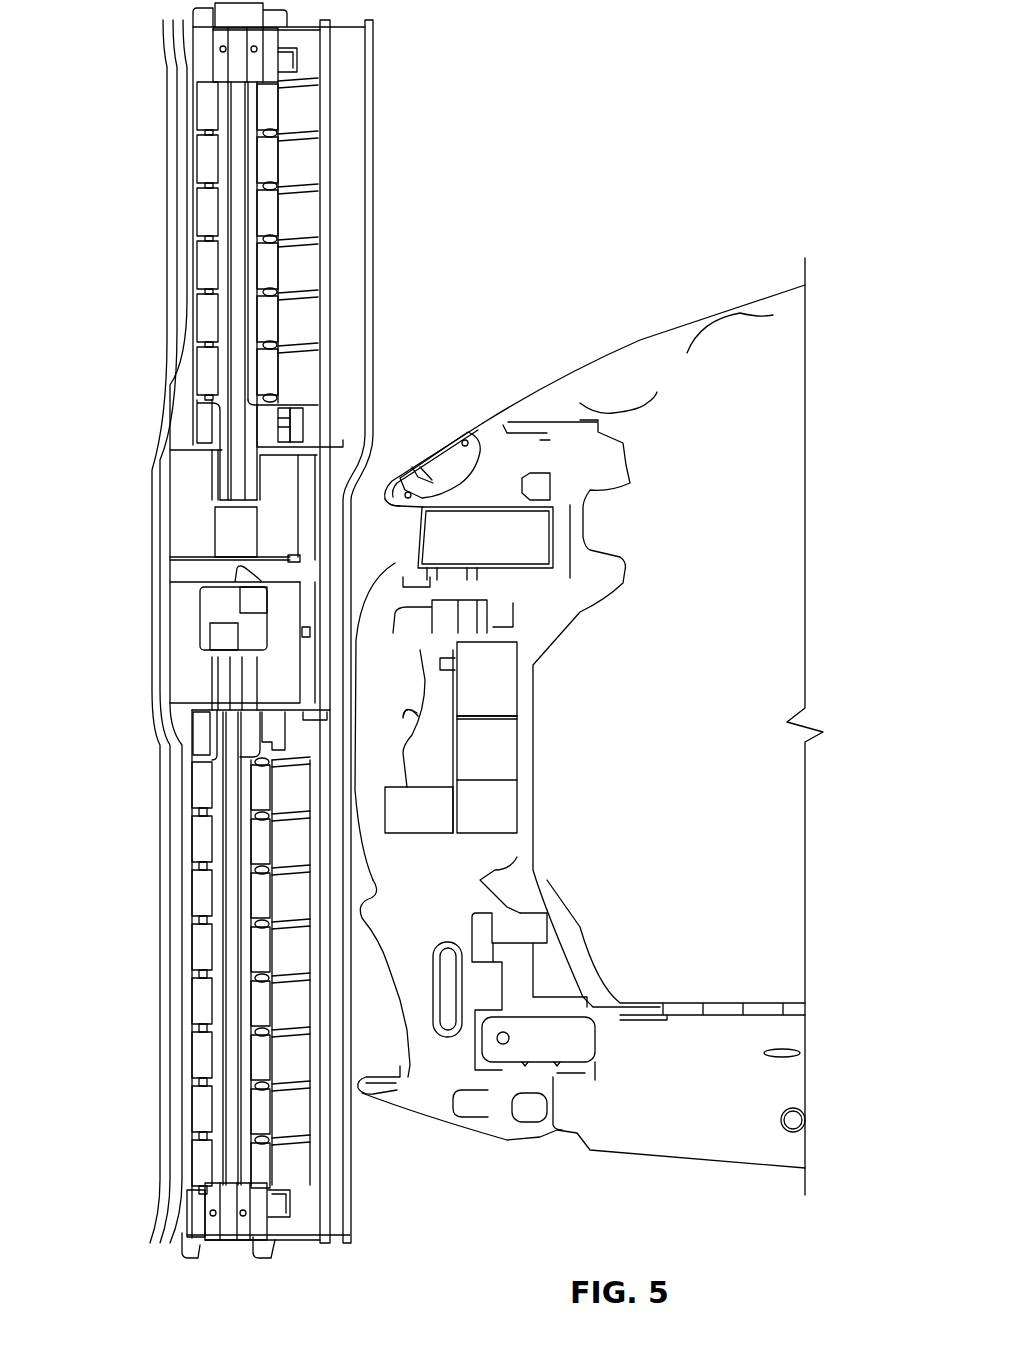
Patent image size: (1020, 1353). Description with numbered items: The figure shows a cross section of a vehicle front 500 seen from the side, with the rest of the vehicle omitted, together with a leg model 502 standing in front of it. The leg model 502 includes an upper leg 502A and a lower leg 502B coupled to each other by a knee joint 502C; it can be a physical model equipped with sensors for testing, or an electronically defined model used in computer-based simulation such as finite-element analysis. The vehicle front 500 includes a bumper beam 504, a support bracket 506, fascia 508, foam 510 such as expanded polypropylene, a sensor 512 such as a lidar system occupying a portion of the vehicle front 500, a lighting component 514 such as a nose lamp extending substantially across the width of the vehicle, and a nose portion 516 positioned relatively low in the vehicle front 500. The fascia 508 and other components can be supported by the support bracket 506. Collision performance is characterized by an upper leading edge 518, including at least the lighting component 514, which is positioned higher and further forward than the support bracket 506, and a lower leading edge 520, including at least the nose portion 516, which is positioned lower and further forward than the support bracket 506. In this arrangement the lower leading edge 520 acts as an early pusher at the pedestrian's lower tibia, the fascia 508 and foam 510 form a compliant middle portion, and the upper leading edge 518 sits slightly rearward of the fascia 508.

The vehicle front 500 is at (722, 44).
The leg model 502 is at (375, 88).
The upper leg 502A is at (165, 165).
The lower leg 502B is at (162, 1058).
The knee joint 502C is at (150, 582).
The bumper beam 504 is at (518, 657).
The support bracket 506 is at (421, 655).
The fascia 508 is at (355, 678).
The foam 510 is at (417, 713).
The sensor 512 is at (509, 551).
The lighting component 514 is at (397, 465).
The nose portion 516 is at (365, 1097).
The upper leading edge 518 is at (380, 520).
The lower leading edge 520 is at (373, 1060).